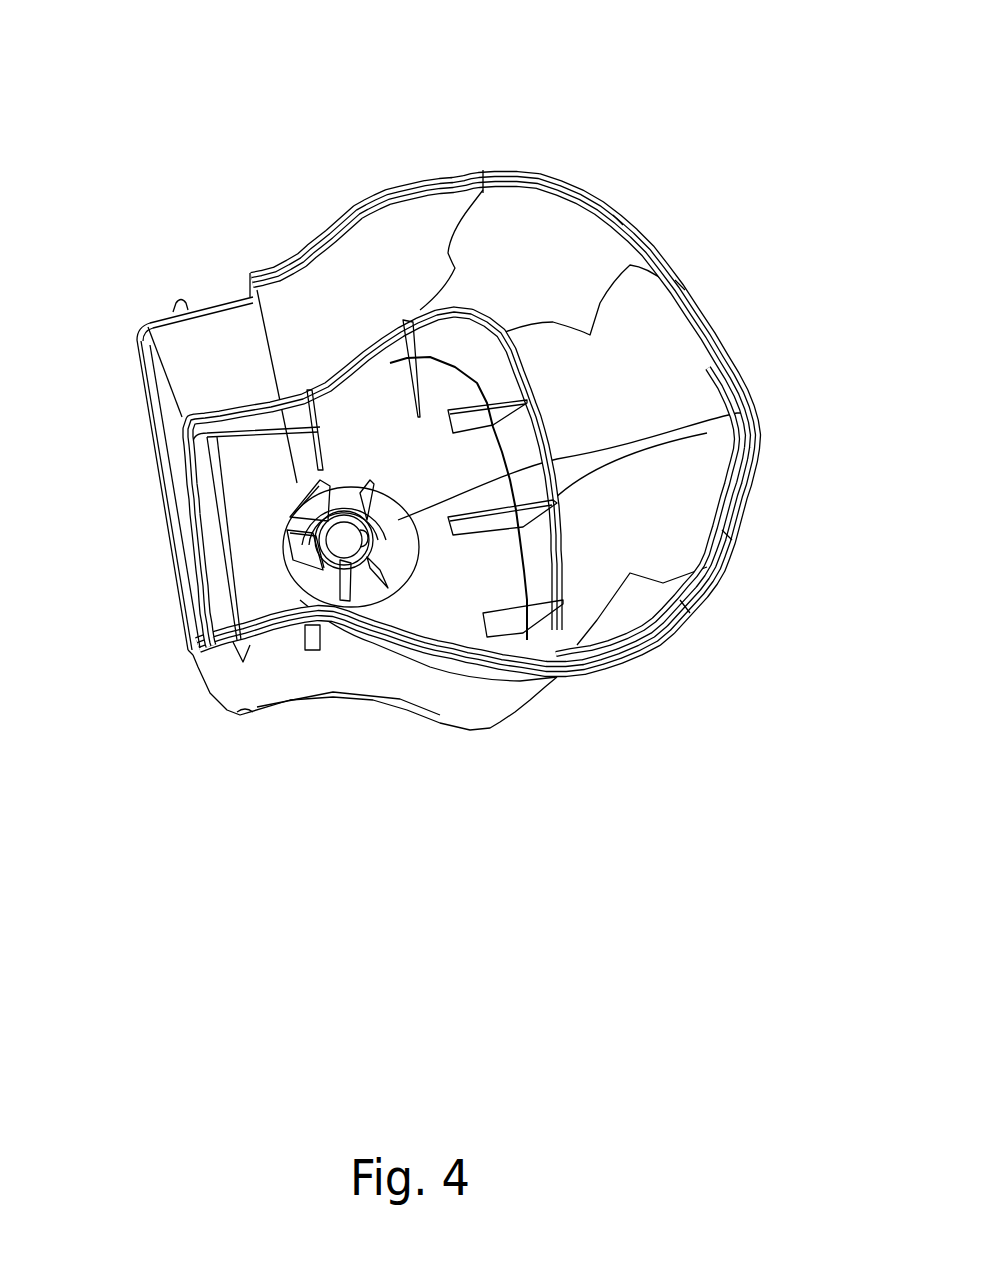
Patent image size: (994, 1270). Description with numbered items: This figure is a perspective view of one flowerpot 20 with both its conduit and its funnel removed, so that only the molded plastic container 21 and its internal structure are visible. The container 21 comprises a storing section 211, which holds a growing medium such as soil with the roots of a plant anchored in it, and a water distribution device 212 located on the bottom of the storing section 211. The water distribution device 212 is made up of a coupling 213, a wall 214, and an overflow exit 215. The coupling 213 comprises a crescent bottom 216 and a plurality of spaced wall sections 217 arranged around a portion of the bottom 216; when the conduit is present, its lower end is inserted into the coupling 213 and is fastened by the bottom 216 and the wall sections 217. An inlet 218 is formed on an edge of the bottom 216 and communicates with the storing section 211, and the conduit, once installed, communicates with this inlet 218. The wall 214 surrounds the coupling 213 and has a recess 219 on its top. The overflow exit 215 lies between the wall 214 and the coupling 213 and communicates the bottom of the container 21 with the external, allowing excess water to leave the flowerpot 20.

The flowerpot 20 is at (632, 78).
The container 21 is at (537, 180).
The storing section 211 is at (458, 354).
The water distribution device 212 is at (393, 522).
The coupling 213 is at (341, 489).
The wall 214 is at (305, 480).
The overflow exit 215 is at (328, 580).
The crescent bottom 216 is at (347, 552).
The spaced wall sections 217 is at (350, 512).
The inlet 218 is at (358, 538).
The recess 219 is at (290, 506).